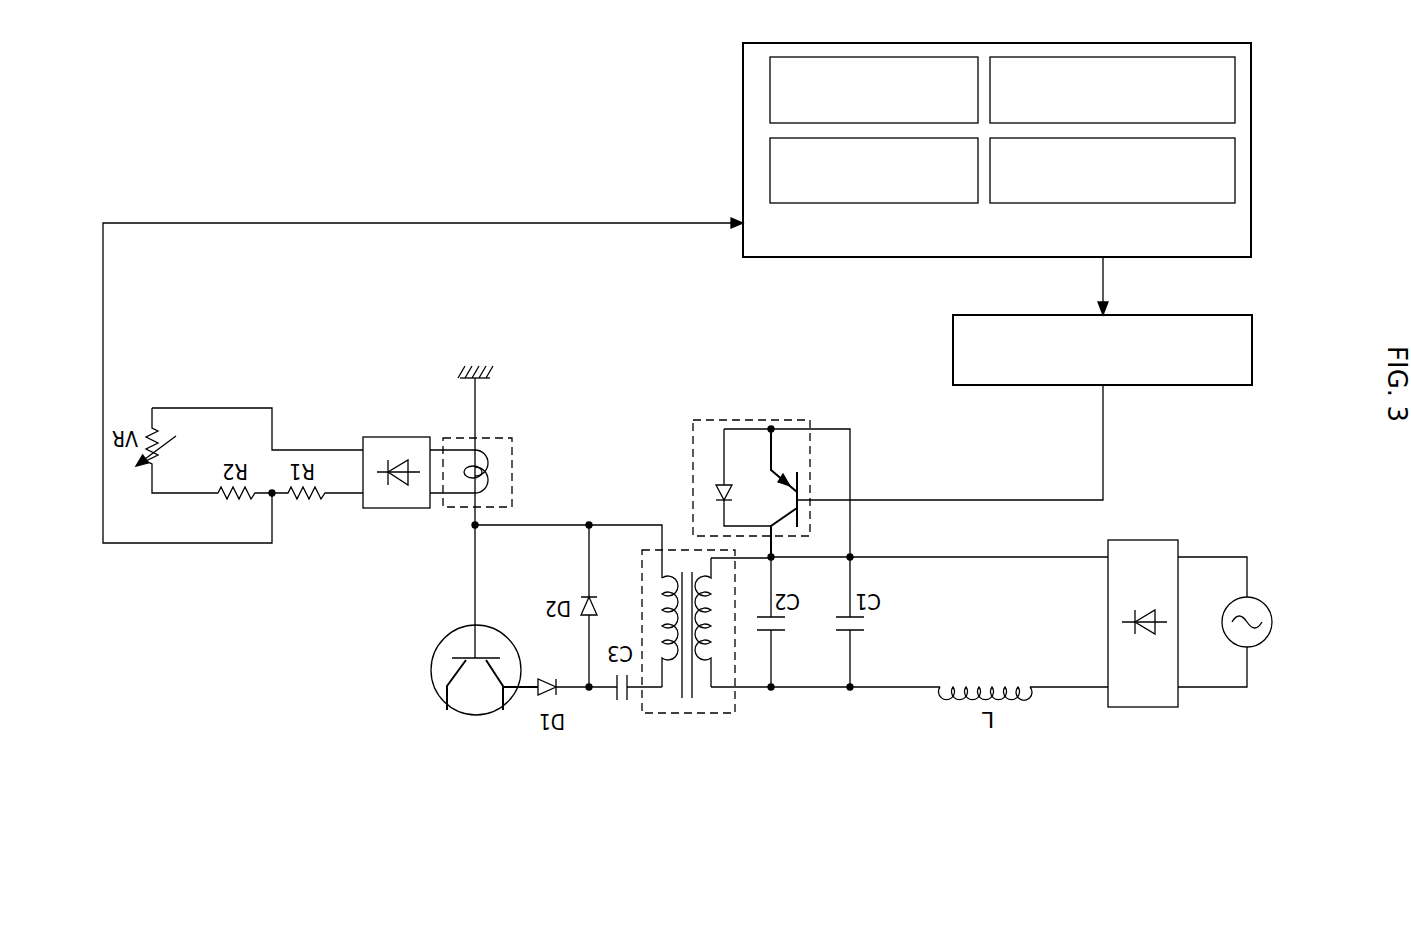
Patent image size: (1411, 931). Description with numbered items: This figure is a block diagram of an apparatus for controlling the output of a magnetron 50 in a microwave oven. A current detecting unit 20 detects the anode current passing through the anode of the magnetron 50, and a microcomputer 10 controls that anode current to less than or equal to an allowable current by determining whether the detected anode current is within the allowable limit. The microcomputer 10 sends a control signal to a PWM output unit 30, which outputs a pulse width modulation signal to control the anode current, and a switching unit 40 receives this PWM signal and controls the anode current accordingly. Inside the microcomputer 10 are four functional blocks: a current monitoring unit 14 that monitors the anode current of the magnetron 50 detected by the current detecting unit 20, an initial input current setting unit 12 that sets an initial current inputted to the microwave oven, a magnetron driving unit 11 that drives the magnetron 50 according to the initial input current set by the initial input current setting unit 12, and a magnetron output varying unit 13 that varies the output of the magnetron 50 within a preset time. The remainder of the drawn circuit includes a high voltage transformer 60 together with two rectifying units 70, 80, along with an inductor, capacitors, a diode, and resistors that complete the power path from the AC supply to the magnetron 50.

The microcomputer 10 is at (1250, 223).
The magnetron driving unit 11 is at (770, 165).
The initial input current setting unit 12 is at (1235, 165).
The magnetron output varying unit 13 is at (770, 95).
The current monitoring unit 14 is at (1235, 87).
The current detecting unit 20 is at (513, 455).
The PWM output unit 30 is at (953, 345).
The switching unit 40 is at (693, 475).
The magnetron 50 is at (431, 672).
The high voltage transformer 60 is at (712, 713).
The rectifying unit 70 is at (1143, 707).
The rectifying unit 80 is at (397, 508).